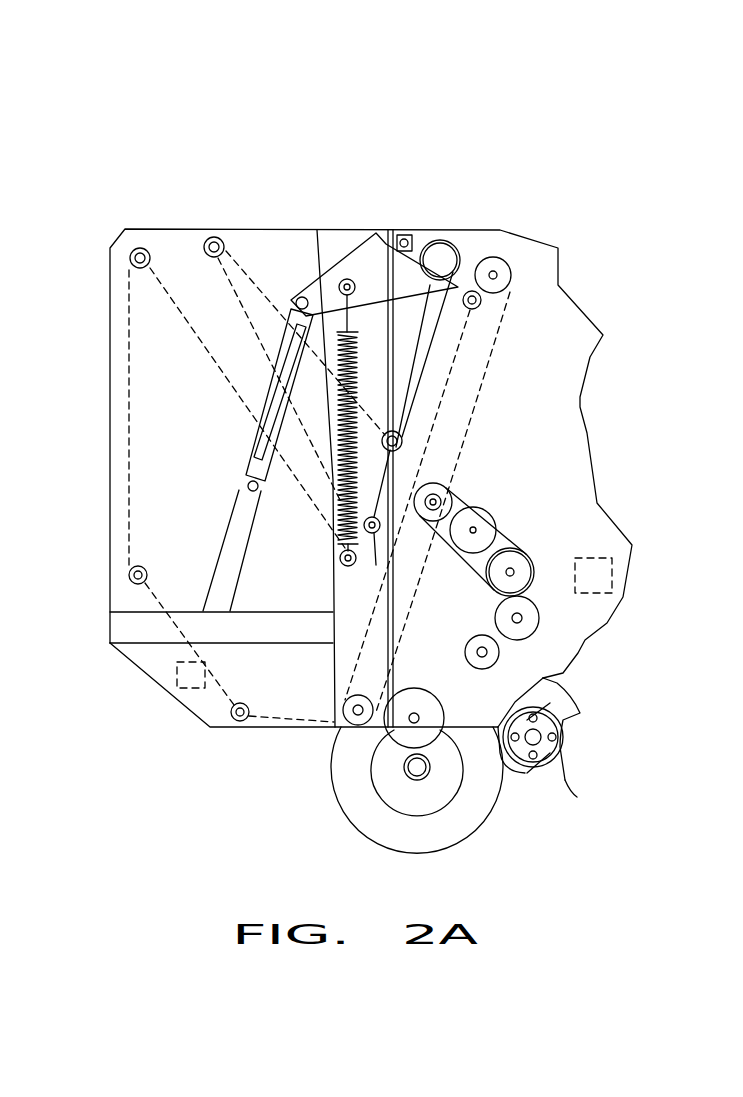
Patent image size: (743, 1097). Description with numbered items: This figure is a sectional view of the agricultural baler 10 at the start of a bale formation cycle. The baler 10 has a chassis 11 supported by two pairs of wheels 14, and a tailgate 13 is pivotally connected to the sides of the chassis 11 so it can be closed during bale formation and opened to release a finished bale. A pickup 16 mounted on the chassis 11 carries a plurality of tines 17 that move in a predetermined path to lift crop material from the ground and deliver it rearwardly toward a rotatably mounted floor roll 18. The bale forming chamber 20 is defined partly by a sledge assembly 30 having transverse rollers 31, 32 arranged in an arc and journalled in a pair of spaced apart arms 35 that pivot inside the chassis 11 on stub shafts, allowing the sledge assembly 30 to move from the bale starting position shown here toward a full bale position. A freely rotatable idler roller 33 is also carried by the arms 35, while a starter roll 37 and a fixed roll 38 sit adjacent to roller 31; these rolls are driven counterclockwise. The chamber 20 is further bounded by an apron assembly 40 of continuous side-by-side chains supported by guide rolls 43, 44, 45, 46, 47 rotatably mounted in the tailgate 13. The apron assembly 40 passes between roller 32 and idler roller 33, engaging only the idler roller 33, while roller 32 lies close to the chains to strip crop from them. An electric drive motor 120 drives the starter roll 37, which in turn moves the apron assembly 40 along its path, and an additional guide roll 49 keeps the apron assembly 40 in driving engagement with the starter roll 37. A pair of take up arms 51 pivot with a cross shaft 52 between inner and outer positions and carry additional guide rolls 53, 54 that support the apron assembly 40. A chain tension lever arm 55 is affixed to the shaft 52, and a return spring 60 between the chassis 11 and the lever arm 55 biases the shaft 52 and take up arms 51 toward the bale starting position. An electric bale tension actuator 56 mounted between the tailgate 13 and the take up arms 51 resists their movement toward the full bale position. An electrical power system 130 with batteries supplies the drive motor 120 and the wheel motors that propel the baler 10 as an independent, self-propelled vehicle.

The agricultural baler 10 is at (366, 162).
The chassis 11 is at (465, 707).
The tailgate 13 is at (108, 300).
The wheels 14 is at (392, 835).
The pickup 16 is at (576, 743).
The tines 17 is at (525, 773).
The floor roll 18 is at (402, 738).
The bale forming chamber 20 is at (277, 257).
The sledge assembly 30 is at (523, 479).
The roller 31 is at (530, 557).
The roller 32 is at (495, 517).
The idler roller 33 is at (450, 483).
The arms 35 is at (480, 570).
The starter roll 37 is at (500, 652).
The fixed roll 38 is at (538, 630).
The apron assembly 40 is at (128, 421).
The guide roll 43 is at (214, 237).
The guide roll 44 is at (140, 247).
The guide roll 45 is at (127, 575).
The guide roll 46 is at (235, 723).
The guide roll 47 is at (353, 712).
The additional guide roll 49 is at (480, 307).
The take up arms 51 is at (470, 292).
The cross shaft 52 is at (445, 240).
The additional guide roll 53 is at (373, 534).
The additional guide roll 54 is at (404, 444).
The chain tension lever arm 55 is at (367, 267).
The electric bale tension actuator 56 is at (260, 460).
The return spring 60 is at (333, 525).
The electric drive motor 120 is at (612, 568).
The electrical power system 130 is at (177, 673).